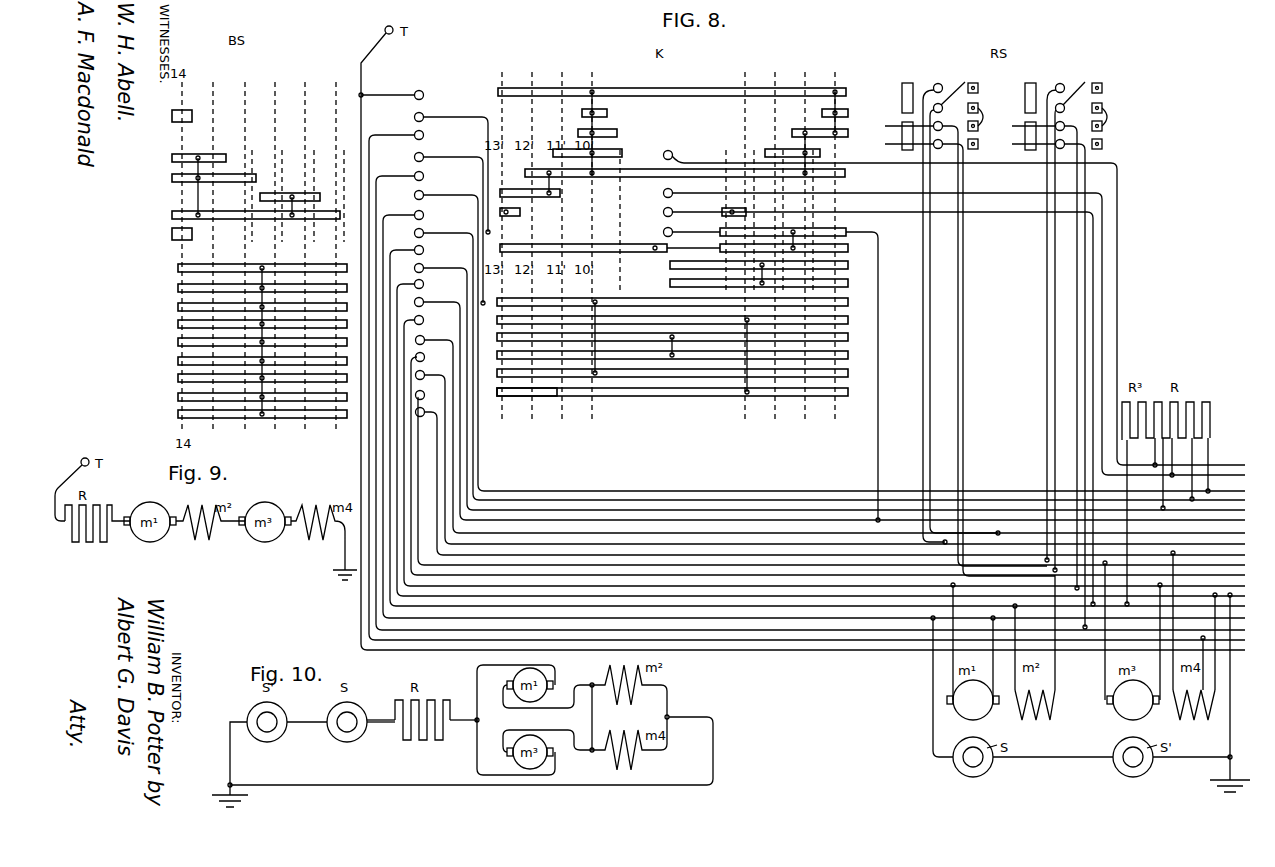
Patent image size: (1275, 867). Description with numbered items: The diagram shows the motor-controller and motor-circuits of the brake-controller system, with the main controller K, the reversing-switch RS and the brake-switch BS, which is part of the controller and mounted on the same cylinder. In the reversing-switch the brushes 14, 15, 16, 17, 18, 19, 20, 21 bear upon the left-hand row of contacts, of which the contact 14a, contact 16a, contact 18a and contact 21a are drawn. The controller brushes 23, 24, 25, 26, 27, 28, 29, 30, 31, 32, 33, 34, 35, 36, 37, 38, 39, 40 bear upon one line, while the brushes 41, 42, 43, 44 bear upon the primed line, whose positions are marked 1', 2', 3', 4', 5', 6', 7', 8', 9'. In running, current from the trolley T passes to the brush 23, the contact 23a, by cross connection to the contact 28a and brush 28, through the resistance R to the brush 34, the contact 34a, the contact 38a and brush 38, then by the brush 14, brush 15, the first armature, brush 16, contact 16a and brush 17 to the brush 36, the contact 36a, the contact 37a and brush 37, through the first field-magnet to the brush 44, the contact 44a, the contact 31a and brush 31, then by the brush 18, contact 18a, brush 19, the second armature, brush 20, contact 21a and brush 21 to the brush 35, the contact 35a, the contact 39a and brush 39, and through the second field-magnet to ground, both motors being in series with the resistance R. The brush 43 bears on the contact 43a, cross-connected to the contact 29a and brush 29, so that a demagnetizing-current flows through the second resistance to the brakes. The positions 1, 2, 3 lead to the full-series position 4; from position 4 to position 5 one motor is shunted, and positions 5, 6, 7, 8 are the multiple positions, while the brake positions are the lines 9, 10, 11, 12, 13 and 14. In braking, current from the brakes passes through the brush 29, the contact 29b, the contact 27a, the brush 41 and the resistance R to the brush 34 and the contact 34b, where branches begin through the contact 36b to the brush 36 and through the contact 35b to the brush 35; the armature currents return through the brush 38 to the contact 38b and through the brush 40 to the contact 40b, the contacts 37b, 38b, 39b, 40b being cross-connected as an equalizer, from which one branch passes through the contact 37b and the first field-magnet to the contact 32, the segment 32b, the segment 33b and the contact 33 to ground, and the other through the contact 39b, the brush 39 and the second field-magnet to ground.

In FIG. 8, the K switch column 1 is at (503, 247).
In FIG. 8, the K switch column 2 is at (532, 247).
In FIG. 8, the K switch column 3 is at (562, 247).
In FIG. 8, the full-series position 4 is at (592, 247).
In FIG. 8, the multiple position 5 is at (745, 247).
In FIG. 8, the multiple position 6 is at (775, 247).
In FIG. 8, the multiple position 7 is at (805, 247).
In FIG. 8, the multiple position 8 is at (835, 247).
In FIG. 8, the brake position 9 is at (334, 257).
In FIG. 8, the brake position 10 is at (304, 258).
In FIG. 8, the brake position 11 is at (276, 258).
In FIG. 8, the brake position 12 is at (244, 258).
In FIG. 8, the brake position 13 is at (213, 258).
In FIG. 8, the brush 14 is at (935, 302).
In FIG. 10, the brush 14 is at (581, 714).
In FIG. 8, the brush 15 is at (965, 297).
In FIG. 10, the brush 15 is at (582, 695).
In FIG. 8, the brush 16 is at (957, 342).
In FIG. 10, the brush 16 is at (487, 708).
In FIG. 8, the brush 17 is at (961, 356).
In FIG. 10, the brush 17 is at (516, 727).
In FIG. 8, the brush 18 is at (1054, 310).
In FIG. 8, the brush 19 is at (1072, 315).
In FIG. 8, the brush 20 is at (1036, 353).
In FIG. 8, the brush 21 is at (1040, 381).
In FIG. 8, the brush 23 is at (402, 95).
In FIG. 8, the brush 24 is at (439, 172).
In FIG. 8, the brush 25 is at (807, 384).
In FIG. 8, the brush 26 is at (436, 227).
In FIG. 8, the brush 27 is at (810, 399).
In FIG. 8, the brush 28 is at (816, 339).
In FIG. 8, the brush 29 is at (814, 413).
In FIG. 10, the brush 29 is at (380, 728).
In FIG. 8, the brush 30 is at (816, 363).
In FIG. 8, the brush 31 is at (817, 424).
In FIG. 8, the contact 32 is at (816, 385).
In FIG. 8, the contact 33 is at (821, 436).
In FIG. 8, the brush 34 is at (816, 407).
In FIG. 10, the brush 34 is at (464, 727).
In FIG. 8, the brush 35 is at (824, 449).
In FIG. 8, the brush 36 is at (831, 434).
In FIG. 10, the brush 36 is at (516, 692).
In FIG. 8, the brush 37 is at (828, 464).
In FIG. 8, the brush 38 is at (831, 458).
In FIG. 10, the brush 38 is at (582, 733).
In FIG. 8, the brush 39 is at (828, 478).
In FIG. 8, the brush 40 is at (827, 482).
In FIG. 8, the brush 41 is at (942, 306).
In FIG. 10, the brush 41 is at (380, 737).
In FIG. 8, the brush 42 is at (942, 330).
In FIG. 8, the brush 43 is at (866, 404).
In FIG. 8, the brush 44 is at (680, 232).
In FIG. 8, the contact 14a is at (907, 86).
In FIG. 8, the contact 16a is at (907, 150).
In FIG. 8, the contact 18a is at (1030, 86).
In FIG. 8, the contact 21a is at (1030, 150).
In FIG. 8, the contact 23a is at (672, 81).
In FIG. 8, the contact 27a is at (506, 176).
In FIG. 8, the contact 28a is at (542, 202).
In FIG. 8, the contact 29a is at (526, 212).
In FIG. 8, the contact 31a is at (674, 240).
In FIG. 8, the contact 34a is at (672, 301).
In FIG. 8, the contact 35a is at (672, 294).
In FIG. 8, the contact 36a is at (690, 345).
In FIG. 8, the contact 37a is at (672, 392).
In FIG. 8, the contact 38a is at (635, 373).
In FIG. 8, the contact 39a is at (578, 392).
In FIG. 8, the contact 43a is at (717, 212).
In FIG. 8, the contact 44a is at (801, 366).
In FIG. 8, the contact 29b is at (235, 215).
In FIG. 8, the segment 32b is at (237, 269).
In FIG. 8, the segment 33b is at (237, 288).
In FIG. 8, the contact 34b is at (237, 307).
In FIG. 8, the contact 35b is at (237, 324).
In FIG. 8, the contact 36b is at (237, 342).
In FIG. 8, the contact 37b is at (237, 361).
In FIG. 8, the contact 38b is at (237, 378).
In FIG. 8, the contact 39b is at (237, 397).
In FIG. 8, the contact 40b is at (237, 414).
In FIG. 10, the contact 40b is at (471, 747).
In FIG. 8, the switch column 1' is at (726, 213).
In FIG. 8, the switch column 2' is at (753, 213).
In FIG. 8, the switch column 3' is at (783, 213).
In FIG. 8, the switch column 4' is at (812, 213).
In FIG. 8, the switch column 5' is at (252, 189).
In FIG. 8, the switch column 6' is at (282, 189).
In FIG. 8, the switch column 7' is at (312, 189).
In FIG. 8, the switch column 8' is at (342, 189).
In FIG. 8, the switch column 9' is at (618, 214).